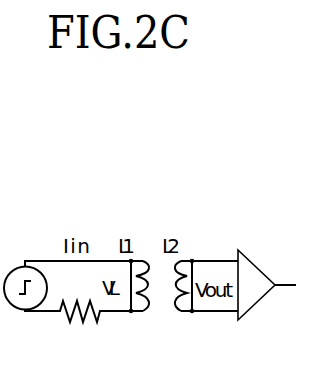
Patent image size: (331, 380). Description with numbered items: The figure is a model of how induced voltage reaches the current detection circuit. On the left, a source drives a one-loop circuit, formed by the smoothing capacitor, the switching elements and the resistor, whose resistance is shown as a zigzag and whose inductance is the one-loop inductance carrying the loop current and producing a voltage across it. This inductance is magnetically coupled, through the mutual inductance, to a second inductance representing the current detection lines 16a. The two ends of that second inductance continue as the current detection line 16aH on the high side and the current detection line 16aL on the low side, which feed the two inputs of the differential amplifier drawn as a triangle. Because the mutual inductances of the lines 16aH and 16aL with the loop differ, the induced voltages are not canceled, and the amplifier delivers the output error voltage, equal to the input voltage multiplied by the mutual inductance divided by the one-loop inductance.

The current detection lines 16a is at (253, 256).
The current detection line 16aH is at (208, 249).
The current detection line 16aL is at (212, 314).